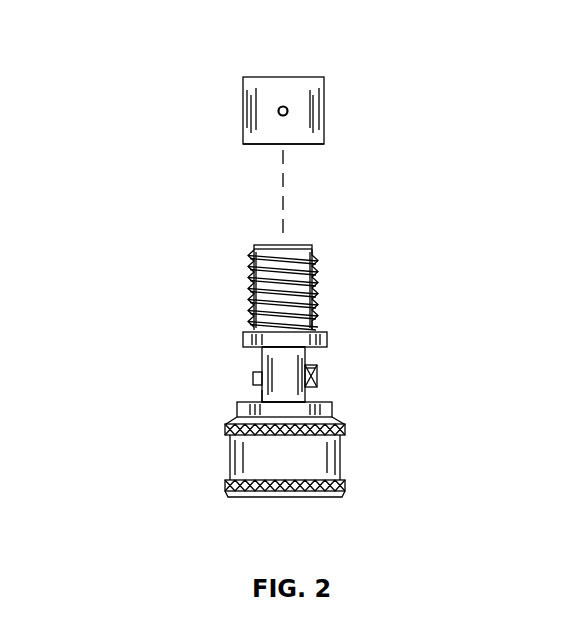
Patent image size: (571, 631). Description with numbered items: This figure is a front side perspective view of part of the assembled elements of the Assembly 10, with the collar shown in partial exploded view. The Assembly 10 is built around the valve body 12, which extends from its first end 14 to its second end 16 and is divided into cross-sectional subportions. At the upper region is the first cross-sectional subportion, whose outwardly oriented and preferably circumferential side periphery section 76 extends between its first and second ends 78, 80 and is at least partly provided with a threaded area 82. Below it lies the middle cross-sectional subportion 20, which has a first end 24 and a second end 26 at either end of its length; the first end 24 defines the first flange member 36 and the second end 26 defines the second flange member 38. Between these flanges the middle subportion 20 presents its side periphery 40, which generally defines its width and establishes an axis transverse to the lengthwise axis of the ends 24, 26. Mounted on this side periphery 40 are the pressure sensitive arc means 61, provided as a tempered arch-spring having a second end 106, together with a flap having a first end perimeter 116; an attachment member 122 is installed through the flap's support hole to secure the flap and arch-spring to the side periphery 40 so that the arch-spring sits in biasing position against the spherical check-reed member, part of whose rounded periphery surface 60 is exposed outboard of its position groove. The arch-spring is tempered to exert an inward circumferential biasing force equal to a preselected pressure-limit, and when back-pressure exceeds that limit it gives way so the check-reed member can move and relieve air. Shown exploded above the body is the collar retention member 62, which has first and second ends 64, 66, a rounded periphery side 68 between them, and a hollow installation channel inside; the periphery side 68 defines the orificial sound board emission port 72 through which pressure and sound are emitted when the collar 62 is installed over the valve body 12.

The Assembly 10 is at (198, 284).
The valve body 12 is at (172, 444).
The first end 14 is at (291, 244).
The second end 16 is at (283, 497).
The middle cross-sectional subportion 20 is at (305, 360).
The first end 24 is at (300, 330).
The second end 26 is at (270, 430).
The first flange member 36 is at (243, 336).
The second flange member 38 is at (315, 386).
The side periphery 40 is at (248, 360).
The rounded periphery surface 60 is at (311, 379).
The pressure sensitive arc means 61 is at (365, 382).
The collar retention member 62 is at (372, 78).
The first end 64 is at (294, 77).
The second end 66 is at (273, 146).
The rounded periphery side 68 is at (248, 128).
The orificial sound board emission port 72 is at (278, 111).
The side periphery section 76 is at (318, 262).
The first end 78 is at (338, 226).
The second end 80 is at (358, 320).
The threaded area 82 is at (275, 283).
The second end 106 is at (317, 367).
The first end perimeter 116 is at (262, 396).
The attachment member 122 is at (253, 377).